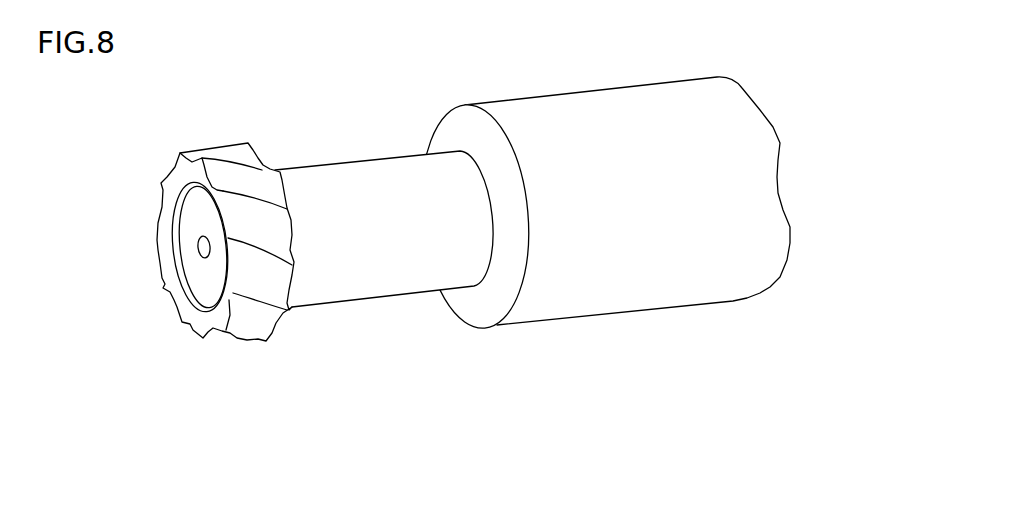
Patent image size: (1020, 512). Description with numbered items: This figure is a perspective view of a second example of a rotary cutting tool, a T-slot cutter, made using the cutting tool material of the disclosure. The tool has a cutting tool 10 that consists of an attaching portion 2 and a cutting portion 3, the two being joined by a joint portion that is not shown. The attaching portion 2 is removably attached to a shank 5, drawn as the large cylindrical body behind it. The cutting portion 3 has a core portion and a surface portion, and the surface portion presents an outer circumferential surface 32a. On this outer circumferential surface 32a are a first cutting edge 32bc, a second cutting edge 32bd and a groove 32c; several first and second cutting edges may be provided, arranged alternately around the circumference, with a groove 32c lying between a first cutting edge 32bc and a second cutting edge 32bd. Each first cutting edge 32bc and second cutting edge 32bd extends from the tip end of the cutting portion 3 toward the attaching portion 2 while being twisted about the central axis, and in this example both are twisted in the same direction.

The attaching portion 2 is at (342, 290).
The cutting portion 3 is at (203, 240).
The shank 5 is at (640, 287).
The cutting tool 10 is at (451, 250).
The outer circumferential surface 32a is at (202, 194).
The groove 32c is at (268, 190).
The second cutting edge 32bd is at (255, 185).
The first cutting edge 32bc is at (237, 188).